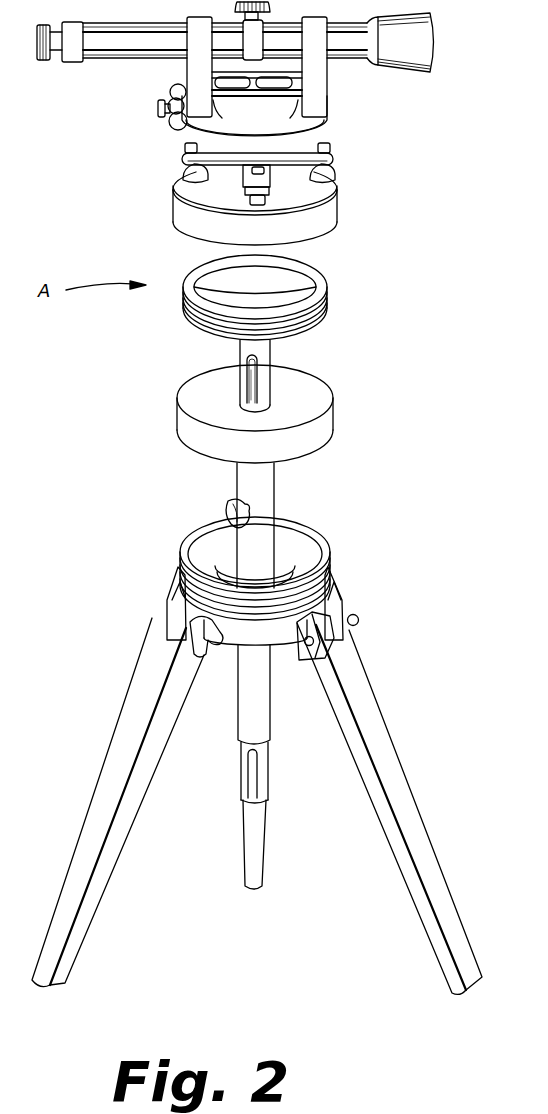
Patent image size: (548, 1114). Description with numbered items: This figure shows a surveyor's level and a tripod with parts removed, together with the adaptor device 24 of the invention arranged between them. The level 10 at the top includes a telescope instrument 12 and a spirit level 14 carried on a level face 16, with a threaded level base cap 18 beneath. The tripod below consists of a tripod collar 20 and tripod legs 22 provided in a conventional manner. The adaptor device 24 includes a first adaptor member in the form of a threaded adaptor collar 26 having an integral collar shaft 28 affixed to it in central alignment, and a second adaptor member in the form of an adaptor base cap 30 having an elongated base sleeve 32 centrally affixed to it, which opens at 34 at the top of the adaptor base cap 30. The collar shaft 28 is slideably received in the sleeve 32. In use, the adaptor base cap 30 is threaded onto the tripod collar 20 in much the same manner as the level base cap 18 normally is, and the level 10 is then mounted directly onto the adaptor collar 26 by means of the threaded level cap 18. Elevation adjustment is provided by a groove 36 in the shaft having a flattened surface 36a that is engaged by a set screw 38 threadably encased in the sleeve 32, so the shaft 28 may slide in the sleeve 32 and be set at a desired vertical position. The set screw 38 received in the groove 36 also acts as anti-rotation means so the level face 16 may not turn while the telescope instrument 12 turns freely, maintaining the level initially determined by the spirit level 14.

The level 10 is at (328, 122).
The telescope instrument 12 is at (142, 20).
The spirit level 14 is at (212, 89).
The level face 16 is at (186, 190).
The threaded level base cap 18 is at (192, 218).
The tripod collar 20 is at (320, 532).
The tripod legs 22 is at (368, 660).
The adaptor device 24 is at (212, 355).
The threaded adaptor collar 26 is at (186, 310).
The collar shaft 28 is at (257, 384).
The adaptor base cap 30 is at (232, 414).
The elongated base sleeve 32 is at (276, 470).
The opening 34 is at (272, 402).
The groove 36 is at (243, 402).
The flattened surface 36a is at (243, 382).
The set screw 38 is at (225, 504).